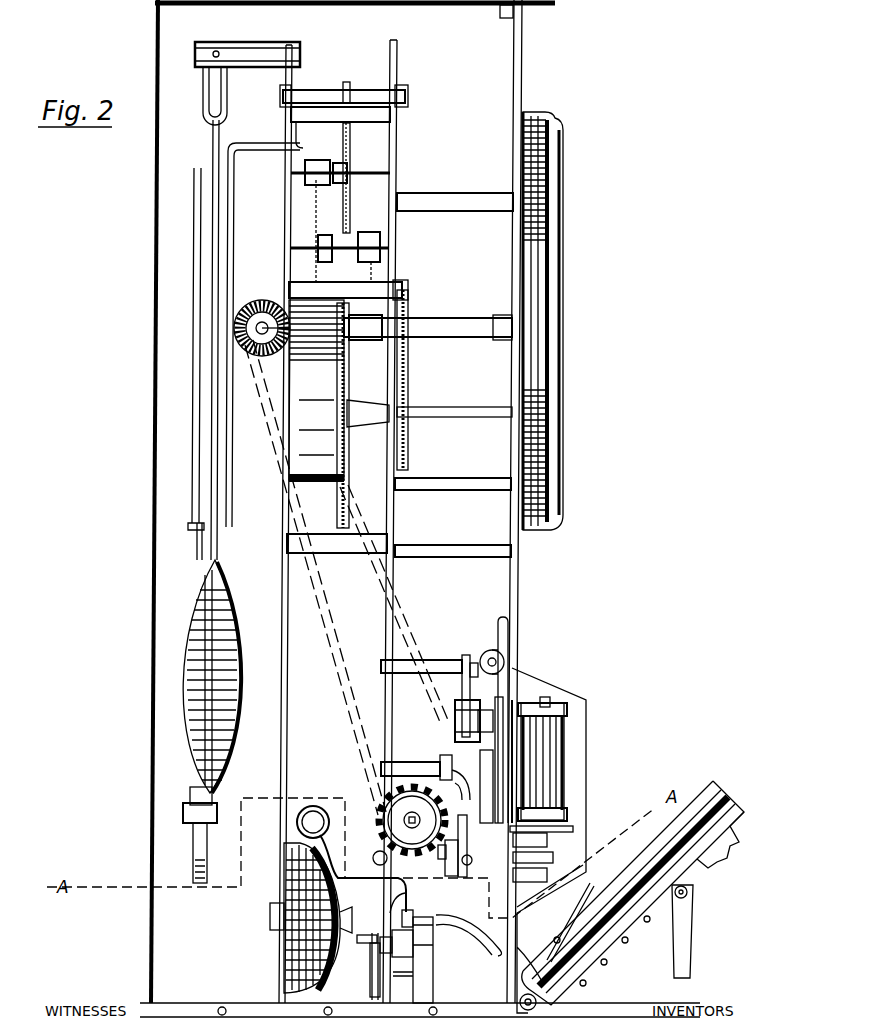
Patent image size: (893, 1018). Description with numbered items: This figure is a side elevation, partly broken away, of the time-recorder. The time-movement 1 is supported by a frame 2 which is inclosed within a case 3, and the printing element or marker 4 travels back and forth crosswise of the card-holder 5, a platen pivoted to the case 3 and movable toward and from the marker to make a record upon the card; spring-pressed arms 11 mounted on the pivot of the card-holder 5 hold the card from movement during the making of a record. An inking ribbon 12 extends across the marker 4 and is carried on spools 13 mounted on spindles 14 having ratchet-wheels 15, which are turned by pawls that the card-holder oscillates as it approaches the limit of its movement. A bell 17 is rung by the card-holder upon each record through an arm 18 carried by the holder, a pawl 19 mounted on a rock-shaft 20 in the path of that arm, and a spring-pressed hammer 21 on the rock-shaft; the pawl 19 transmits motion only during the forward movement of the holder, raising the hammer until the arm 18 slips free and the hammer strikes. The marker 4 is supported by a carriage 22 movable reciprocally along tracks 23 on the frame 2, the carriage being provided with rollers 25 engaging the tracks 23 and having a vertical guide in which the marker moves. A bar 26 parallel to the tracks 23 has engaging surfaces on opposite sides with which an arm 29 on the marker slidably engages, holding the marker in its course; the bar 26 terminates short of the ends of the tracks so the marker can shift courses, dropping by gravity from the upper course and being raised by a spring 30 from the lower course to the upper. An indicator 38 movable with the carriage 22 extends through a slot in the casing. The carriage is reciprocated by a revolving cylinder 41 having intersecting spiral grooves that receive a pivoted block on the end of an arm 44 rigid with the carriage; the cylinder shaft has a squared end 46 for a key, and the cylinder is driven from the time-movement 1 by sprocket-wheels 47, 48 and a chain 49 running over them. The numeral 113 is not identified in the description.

The time-movement 1 is at (347, 447).
The frame 2 is at (388, 588).
The case 3 is at (466, 32).
The printing element or marker 4 is at (480, 785).
The card-holder 5 is at (695, 845).
The spring-pressed arms 11 is at (575, 900).
The inking ribbon 12 is at (548, 748).
The spools 13 is at (558, 717).
The spindles 14 is at (548, 707).
The ratchet-wheels 15 is at (565, 858).
The bell 17 is at (303, 898).
The arm 18 is at (480, 943).
The pawl 19 is at (430, 948).
The rock-shaft 20 is at (362, 948).
The spring-pressed hammer 21 is at (301, 823).
The carriage 22 is at (467, 855).
The tracks 23 is at (466, 658).
The rollers 25 is at (455, 708).
The bar 26 is at (440, 758).
The arm 29 is at (452, 770).
The spring 30 is at (503, 690).
The indicator 38 is at (500, 620).
The cylinder 41 is at (374, 852).
The arm 44 is at (452, 876).
The squared end 46 is at (410, 820).
The sprocket-wheel 47 is at (395, 800).
The sprocket-wheel 48 is at (266, 302).
The chain 49 is at (338, 676).
The pipe 113 is at (381, 881).